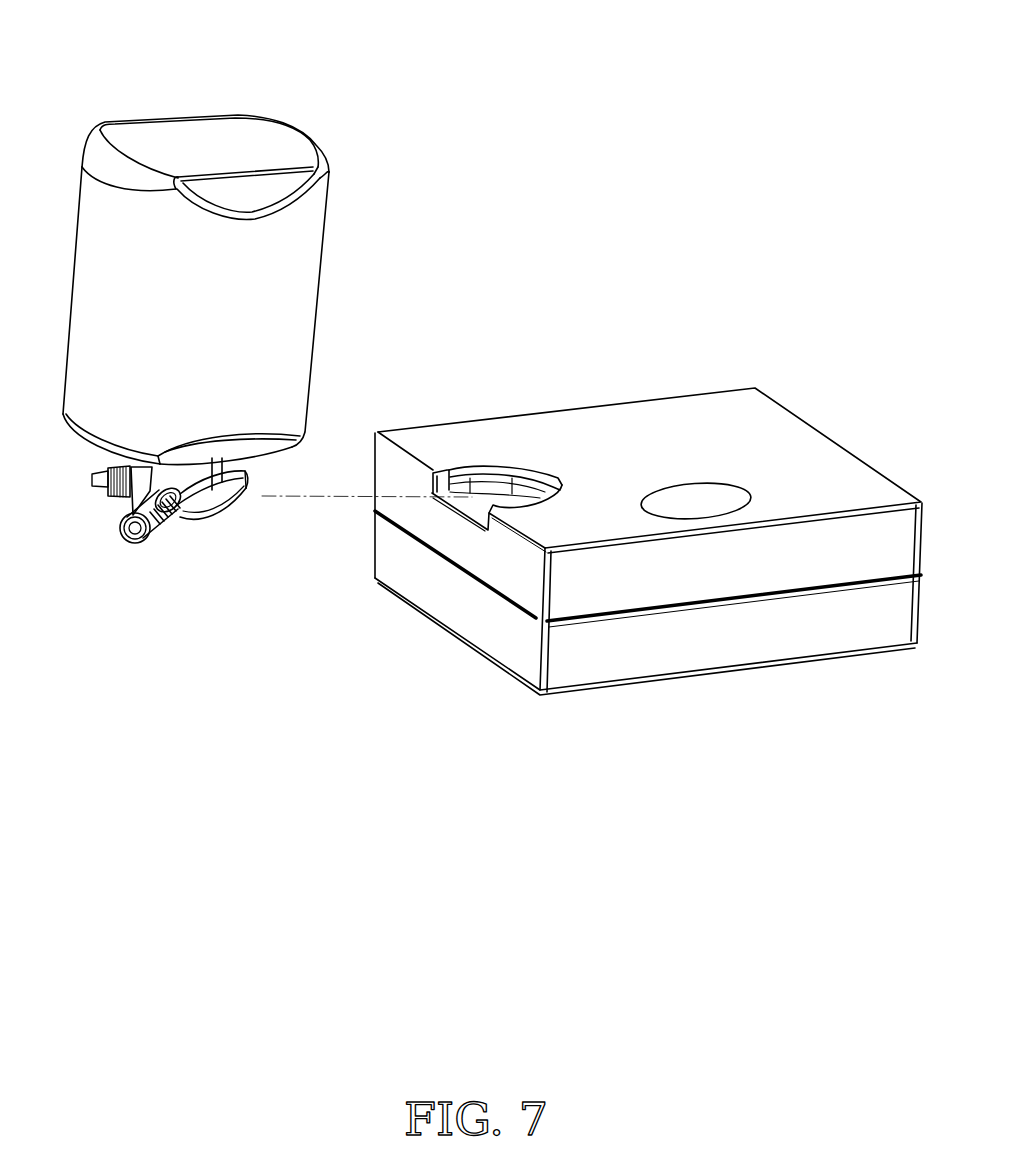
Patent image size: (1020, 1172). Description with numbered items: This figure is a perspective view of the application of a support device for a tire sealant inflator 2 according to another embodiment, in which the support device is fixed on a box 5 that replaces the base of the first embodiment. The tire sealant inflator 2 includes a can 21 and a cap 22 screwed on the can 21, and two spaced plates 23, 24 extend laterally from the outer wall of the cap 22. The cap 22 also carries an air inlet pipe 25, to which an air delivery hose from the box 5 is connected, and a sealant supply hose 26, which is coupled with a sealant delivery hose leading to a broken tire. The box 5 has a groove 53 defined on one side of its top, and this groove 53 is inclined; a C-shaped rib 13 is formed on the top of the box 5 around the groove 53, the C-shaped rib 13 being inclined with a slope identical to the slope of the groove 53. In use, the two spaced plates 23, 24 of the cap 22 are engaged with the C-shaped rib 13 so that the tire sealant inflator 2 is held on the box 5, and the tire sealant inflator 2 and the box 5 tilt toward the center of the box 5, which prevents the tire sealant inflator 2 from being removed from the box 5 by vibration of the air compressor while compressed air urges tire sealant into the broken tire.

The tire sealant inflator 2 is at (233, 250).
The can 21 is at (302, 245).
The cap 22 is at (131, 507).
The spaced plate 23 is at (240, 506).
The spaced plate 24 is at (212, 515).
The air inlet pipe 25 is at (144, 524).
The sealant supply hose 26 is at (90, 484).
The C-shaped rib 13 is at (503, 474).
The groove 53 is at (477, 507).
The box 5 is at (705, 637).